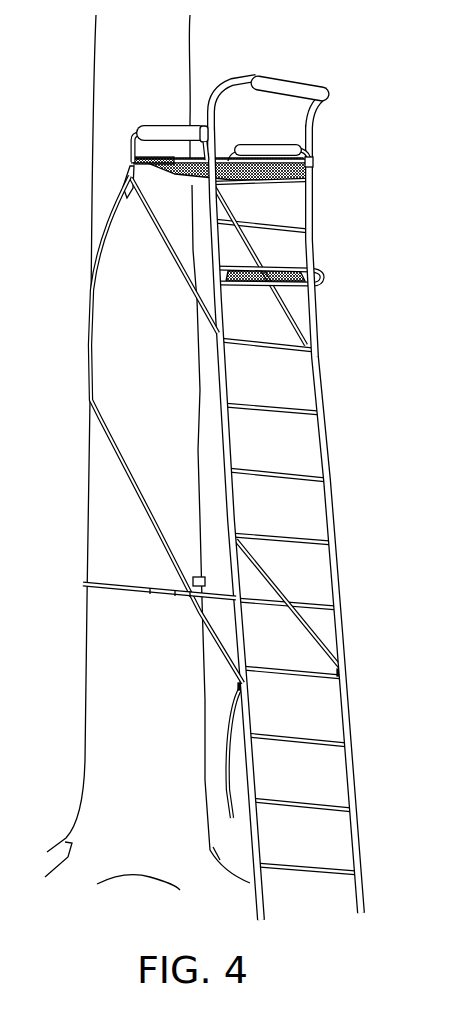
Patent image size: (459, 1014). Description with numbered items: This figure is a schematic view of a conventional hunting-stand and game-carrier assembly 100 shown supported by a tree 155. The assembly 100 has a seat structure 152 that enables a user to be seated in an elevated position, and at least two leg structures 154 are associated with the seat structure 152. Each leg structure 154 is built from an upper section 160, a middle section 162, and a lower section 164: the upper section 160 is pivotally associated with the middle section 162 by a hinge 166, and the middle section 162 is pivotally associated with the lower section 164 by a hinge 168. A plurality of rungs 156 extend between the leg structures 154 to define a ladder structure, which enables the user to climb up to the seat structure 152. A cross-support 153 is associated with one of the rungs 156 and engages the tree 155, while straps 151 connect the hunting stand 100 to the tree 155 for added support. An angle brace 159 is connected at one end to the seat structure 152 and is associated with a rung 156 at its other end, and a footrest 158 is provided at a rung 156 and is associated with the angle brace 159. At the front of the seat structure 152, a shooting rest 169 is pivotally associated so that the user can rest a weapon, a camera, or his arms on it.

The hunting-stand and game-carrier assembly 100 is at (229, 499).
The straps 151 is at (110, 216).
The seat structure 152 is at (232, 160).
The cross-support 153 is at (108, 581).
The leg structures 154 is at (240, 475).
The tree 155 is at (134, 696).
The rungs 156 is at (300, 531).
The footrest 158 is at (297, 267).
The angle brace 159 is at (270, 230).
The upper section 160 is at (318, 354).
The middle section 162 is at (337, 568).
The lower section 164 is at (352, 758).
The hinge 166 is at (225, 402).
The hinge 168 is at (243, 655).
The shooting rest 169 is at (308, 126).